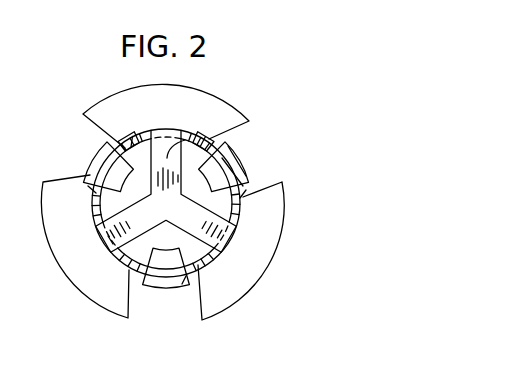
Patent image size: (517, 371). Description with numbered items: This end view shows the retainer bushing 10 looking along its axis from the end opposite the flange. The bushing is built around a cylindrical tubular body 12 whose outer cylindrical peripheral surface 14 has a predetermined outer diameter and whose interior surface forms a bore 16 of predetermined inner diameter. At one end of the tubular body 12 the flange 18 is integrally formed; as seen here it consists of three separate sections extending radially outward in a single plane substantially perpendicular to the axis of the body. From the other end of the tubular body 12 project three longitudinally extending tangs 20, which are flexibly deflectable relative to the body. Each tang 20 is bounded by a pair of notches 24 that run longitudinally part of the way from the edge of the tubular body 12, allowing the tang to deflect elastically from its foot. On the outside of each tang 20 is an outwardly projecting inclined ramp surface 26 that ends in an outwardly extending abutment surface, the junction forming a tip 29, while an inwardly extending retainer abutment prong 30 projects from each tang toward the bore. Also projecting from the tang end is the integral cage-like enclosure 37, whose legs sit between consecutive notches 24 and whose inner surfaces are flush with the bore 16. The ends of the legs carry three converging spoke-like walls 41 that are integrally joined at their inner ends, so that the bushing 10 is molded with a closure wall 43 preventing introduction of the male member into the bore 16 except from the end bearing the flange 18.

The retainer bushing 10 is at (108, 320).
The cylindrical tubular body 12 is at (93, 214).
The cylindrical peripheral surface 14 is at (107, 236).
The bore 16 is at (128, 132).
The flange 18 is at (246, 118).
The tang 20 is at (92, 162).
The notches 24 is at (86, 187).
The ramp surface 26 is at (248, 171).
The tip 29 is at (248, 156).
The retainer abutment prong 30 is at (216, 178).
The cage-like enclosure 37 is at (180, 123).
The spoke-like wall 41 is at (193, 167).
The closure wall 43 is at (216, 256).